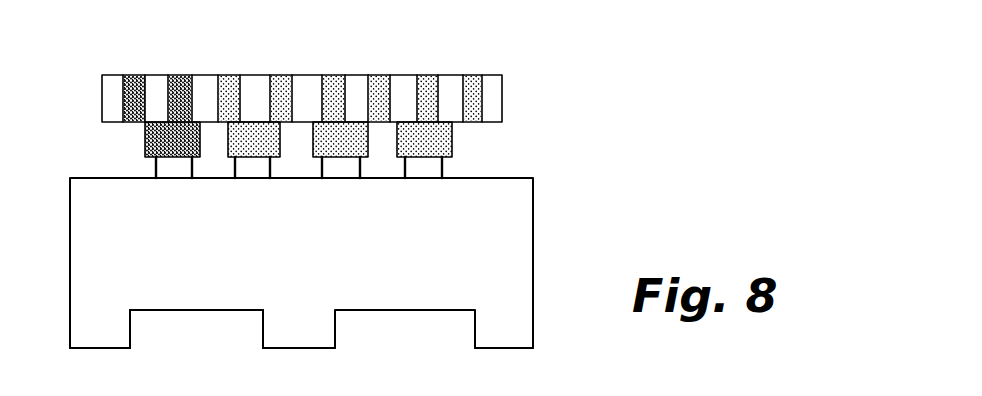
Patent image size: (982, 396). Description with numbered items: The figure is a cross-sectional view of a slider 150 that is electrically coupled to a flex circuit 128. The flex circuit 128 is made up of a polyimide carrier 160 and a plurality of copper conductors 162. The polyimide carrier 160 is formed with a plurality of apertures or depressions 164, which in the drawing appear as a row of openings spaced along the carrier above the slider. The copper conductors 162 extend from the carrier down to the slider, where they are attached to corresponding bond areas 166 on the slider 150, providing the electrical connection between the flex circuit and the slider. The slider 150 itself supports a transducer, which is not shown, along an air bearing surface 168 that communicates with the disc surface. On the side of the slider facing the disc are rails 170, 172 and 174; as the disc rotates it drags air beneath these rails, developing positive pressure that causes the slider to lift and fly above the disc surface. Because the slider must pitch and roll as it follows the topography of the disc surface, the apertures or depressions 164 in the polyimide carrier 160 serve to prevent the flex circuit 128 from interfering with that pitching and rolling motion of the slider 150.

The flex circuit 128 is at (516, 117).
The polyimide carrier 160 is at (507, 78).
The apertures or depressions 164 is at (277, 75).
The copper conductors 162 is at (143, 131).
The bond areas 166 is at (173, 178).
The slider 150 is at (533, 231).
The air bearing surface 168 is at (246, 316).
The rail 170 is at (80, 348).
The rail 172 is at (333, 347).
The rail 174 is at (526, 348).